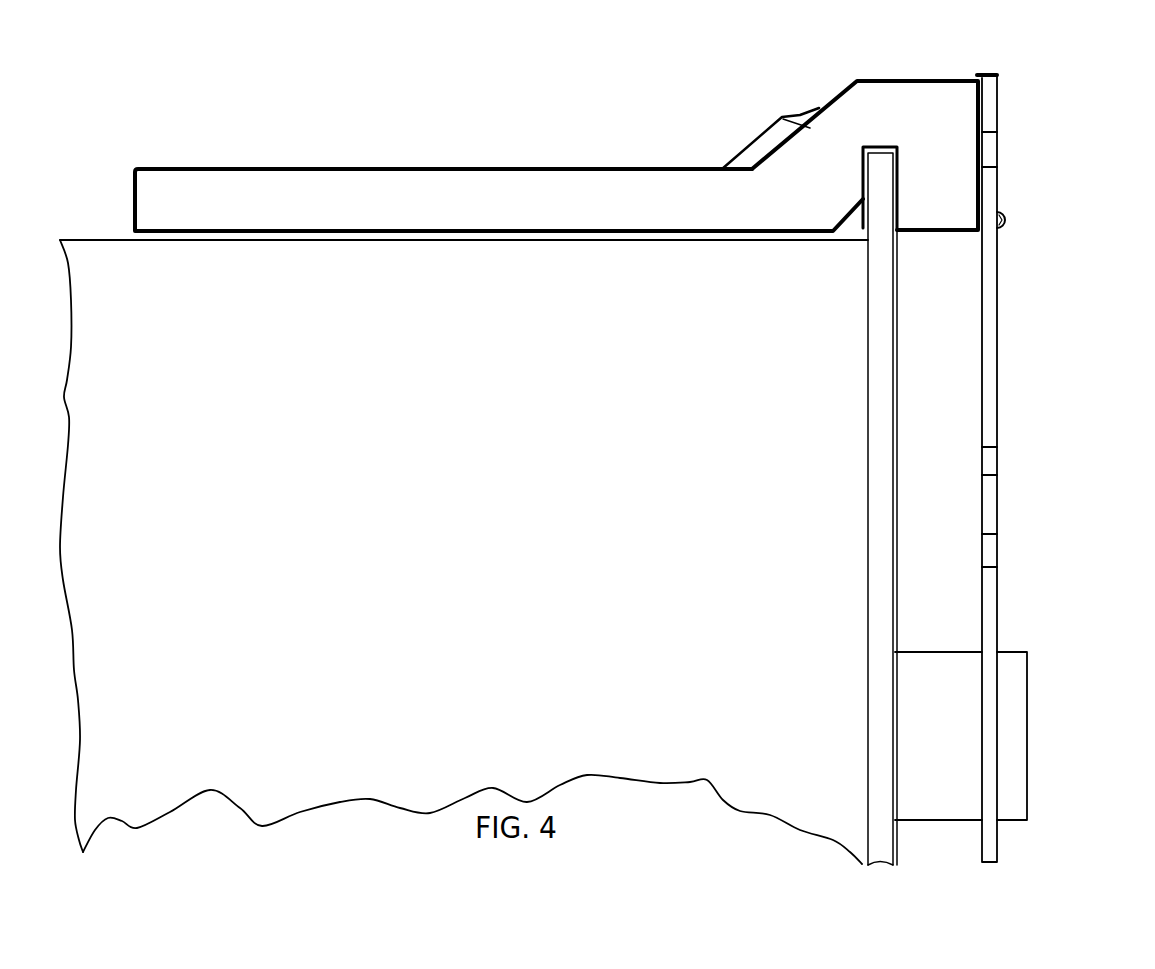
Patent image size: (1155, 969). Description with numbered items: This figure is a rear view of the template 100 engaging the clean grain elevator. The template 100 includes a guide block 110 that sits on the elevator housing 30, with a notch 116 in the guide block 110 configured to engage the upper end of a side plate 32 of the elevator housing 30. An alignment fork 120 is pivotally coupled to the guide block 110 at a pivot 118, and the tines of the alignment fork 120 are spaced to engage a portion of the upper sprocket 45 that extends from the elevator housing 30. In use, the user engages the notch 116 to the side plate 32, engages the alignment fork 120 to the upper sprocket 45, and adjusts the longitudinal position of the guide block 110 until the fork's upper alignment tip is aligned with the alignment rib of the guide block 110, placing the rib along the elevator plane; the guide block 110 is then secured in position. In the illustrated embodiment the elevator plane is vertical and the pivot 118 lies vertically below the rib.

The elevator housing 30 is at (73, 240).
The side plate 32 is at (867, 311).
The upper sprocket 45 is at (1028, 747).
The template 100 is at (626, 92).
The guide block 110 is at (447, 167).
The notch 116 is at (867, 178).
The pivot 118 is at (1008, 221).
The alignment fork 120 is at (997, 365).